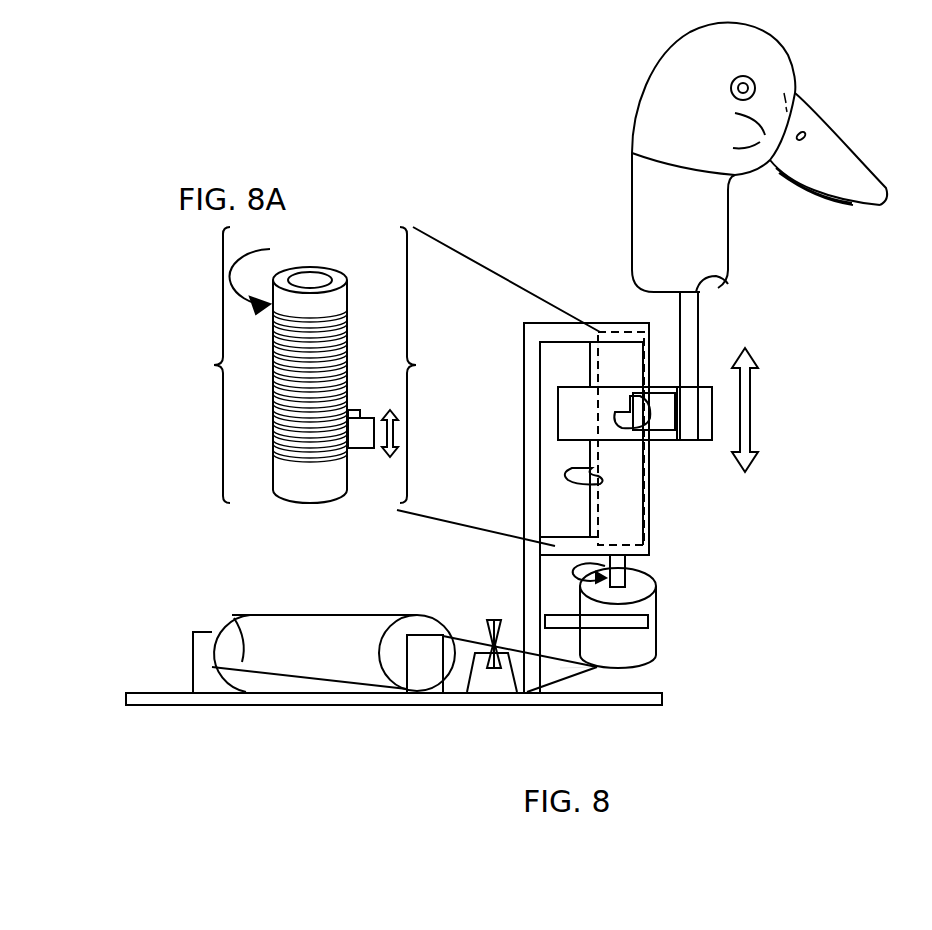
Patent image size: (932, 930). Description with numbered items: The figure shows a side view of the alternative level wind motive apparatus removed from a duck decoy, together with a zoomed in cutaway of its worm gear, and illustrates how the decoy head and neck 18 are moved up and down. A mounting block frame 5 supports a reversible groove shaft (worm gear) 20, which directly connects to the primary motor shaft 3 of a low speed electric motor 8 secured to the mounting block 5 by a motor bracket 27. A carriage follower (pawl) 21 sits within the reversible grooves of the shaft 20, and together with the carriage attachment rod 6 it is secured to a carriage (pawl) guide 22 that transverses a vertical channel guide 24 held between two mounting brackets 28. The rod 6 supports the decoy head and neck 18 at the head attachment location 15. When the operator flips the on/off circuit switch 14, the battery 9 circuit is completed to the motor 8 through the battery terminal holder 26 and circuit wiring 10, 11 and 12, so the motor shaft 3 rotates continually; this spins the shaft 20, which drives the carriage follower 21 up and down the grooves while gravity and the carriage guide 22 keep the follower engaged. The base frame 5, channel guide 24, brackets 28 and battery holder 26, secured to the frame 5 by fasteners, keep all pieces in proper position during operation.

In FIG. 8, the motor shaft 3 is at (655, 586).
In FIG. 8, the mounting block frame 5 is at (170, 690).
In FIG. 8, the carriage attachment rod 6 is at (689, 428).
In FIG. 8, the motor 8 is at (632, 640).
In FIG. 8, the battery 9 is at (316, 658).
In FIG. 8, the circuit wiring 10 is at (470, 640).
In FIG. 8, the circuit wiring 11 is at (575, 670).
In FIG. 8, the circuit wiring 12 is at (228, 632).
In FIG. 8, the on/off circuit switch 14 is at (494, 684).
In FIG. 8, the head attachment location 15 is at (728, 282).
In FIG. 8, the decoy head and neck 18 is at (707, 100).
In FIG. 8A, the reversible groove shaft 20 is at (322, 487).
In FIG. 8, the reversible groove shaft 20 is at (627, 497).
In FIG. 8A, the carriage follower 21 is at (360, 452).
In FIG. 8, the carriage follower 21 is at (616, 418).
In FIG. 8, the carriage guide 22 is at (580, 408).
In FIG. 8, the channel guide 24 is at (598, 360).
In FIG. 8, the battery terminal holder 26 is at (437, 678).
In FIG. 8, the motor bracket 27 is at (650, 624).
In FIG. 8, the mounting brackets 28 is at (612, 323).